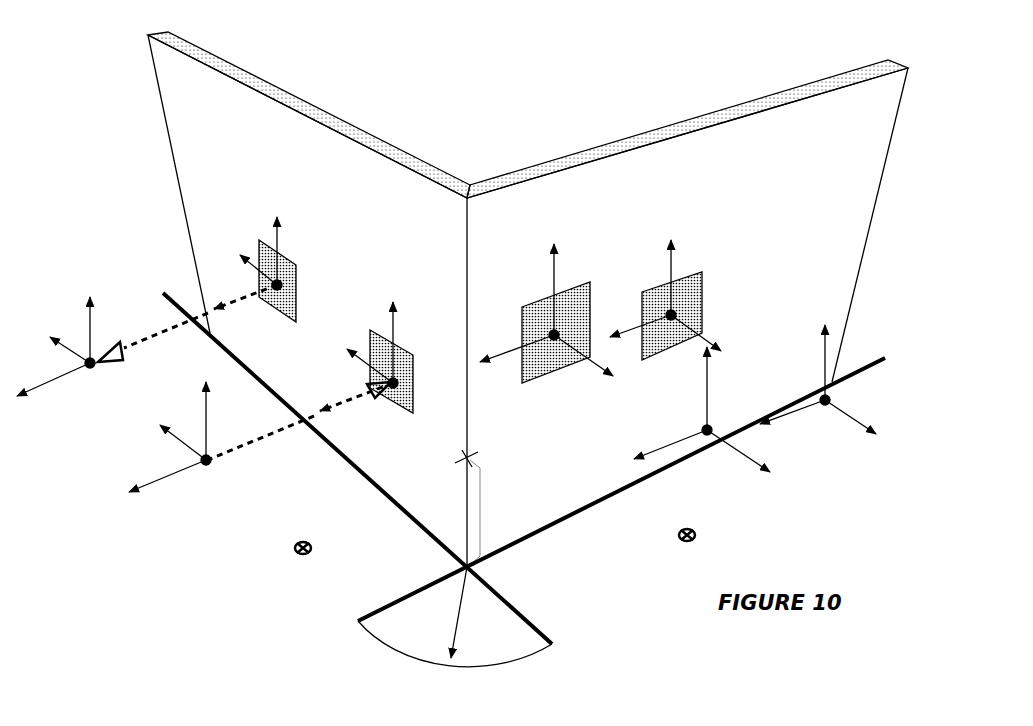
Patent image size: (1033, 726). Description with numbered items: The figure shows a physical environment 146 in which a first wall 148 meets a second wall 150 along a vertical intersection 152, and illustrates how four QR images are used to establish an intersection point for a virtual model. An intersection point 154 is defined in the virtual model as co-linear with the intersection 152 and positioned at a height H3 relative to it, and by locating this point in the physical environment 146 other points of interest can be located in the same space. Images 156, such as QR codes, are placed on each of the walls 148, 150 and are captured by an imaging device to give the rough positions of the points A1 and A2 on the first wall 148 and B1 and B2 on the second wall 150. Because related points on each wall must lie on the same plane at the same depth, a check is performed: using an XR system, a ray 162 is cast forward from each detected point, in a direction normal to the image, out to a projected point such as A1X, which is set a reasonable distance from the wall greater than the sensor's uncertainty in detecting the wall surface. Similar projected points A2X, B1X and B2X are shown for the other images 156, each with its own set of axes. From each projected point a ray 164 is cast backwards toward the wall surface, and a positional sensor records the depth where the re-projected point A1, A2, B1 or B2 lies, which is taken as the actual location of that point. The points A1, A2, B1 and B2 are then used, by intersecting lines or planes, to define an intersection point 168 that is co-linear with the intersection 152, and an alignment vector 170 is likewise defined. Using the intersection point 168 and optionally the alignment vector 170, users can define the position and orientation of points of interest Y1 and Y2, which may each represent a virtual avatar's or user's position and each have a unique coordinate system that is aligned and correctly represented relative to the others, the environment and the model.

The physical environment 146 is at (441, 92).
The first wall 148 is at (170, 148).
The second wall 150 is at (883, 175).
The intersection 152 is at (465, 288).
The intersection point 154 is at (469, 456).
The images 156 is at (292, 262).
The ray 162 is at (150, 341).
The ray 164 is at (260, 440).
The intersection point 168 is at (463, 566).
The alignment vector 170 is at (459, 631).
The point A1 is at (277, 285).
The point A2 is at (393, 383).
The point B1 is at (554, 336).
The point B2 is at (671, 316).
The projected point A1X is at (92, 366).
The projected point A2X is at (208, 463).
The projected point B1X is at (707, 433).
The projected point B2X is at (825, 403).
The point of interest Y1 is at (312, 552).
The point of interest Y2 is at (678, 541).
The height H3 is at (480, 512).